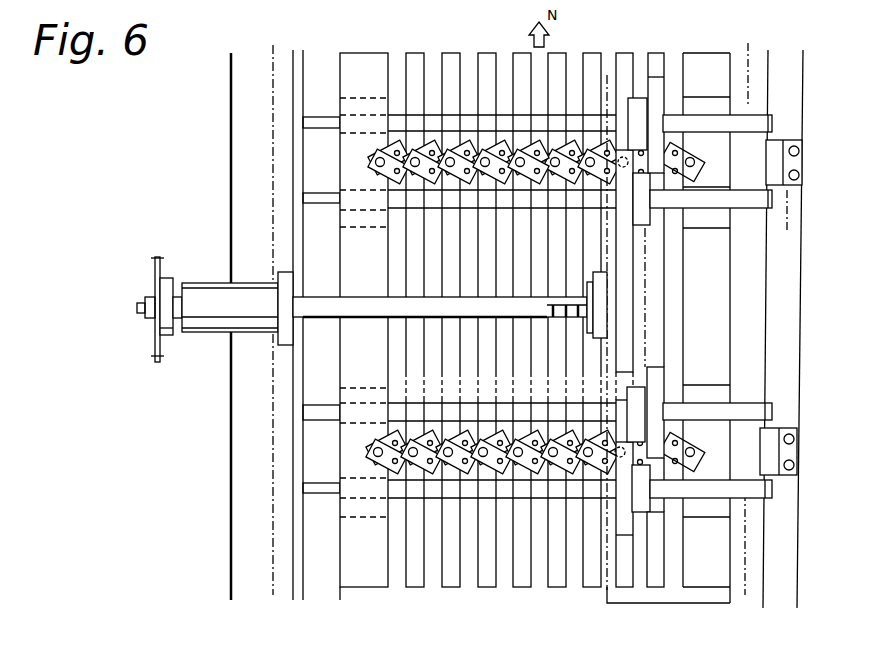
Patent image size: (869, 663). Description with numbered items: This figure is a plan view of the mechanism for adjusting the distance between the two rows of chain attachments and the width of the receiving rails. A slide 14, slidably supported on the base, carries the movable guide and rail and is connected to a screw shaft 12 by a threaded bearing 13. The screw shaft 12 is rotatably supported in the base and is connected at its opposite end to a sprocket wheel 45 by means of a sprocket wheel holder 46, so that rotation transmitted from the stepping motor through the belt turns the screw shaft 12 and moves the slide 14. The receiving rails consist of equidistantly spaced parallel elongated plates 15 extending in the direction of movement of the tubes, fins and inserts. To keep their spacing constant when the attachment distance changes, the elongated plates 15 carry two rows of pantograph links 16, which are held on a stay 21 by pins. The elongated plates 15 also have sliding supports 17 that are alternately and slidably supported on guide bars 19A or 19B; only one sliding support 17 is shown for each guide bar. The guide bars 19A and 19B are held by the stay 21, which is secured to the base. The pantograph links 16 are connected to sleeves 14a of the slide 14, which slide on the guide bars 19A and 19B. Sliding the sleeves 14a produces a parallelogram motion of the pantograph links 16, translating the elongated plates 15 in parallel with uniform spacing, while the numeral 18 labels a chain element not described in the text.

The screw shaft 12 is at (555, 297).
The threaded bearing 13 is at (597, 280).
The slide 14 is at (673, 302).
The sleeves 14a is at (725, 160).
The elongated plates 15 is at (451, 577).
The pantograph links 16 is at (396, 140).
The sliding supports 17 is at (654, 382).
The chain link 18 is at (523, 158).
The guide bar 19A is at (408, 202).
The guide bar 19B is at (503, 115).
The stay 21 is at (345, 160).
The sprocket wheel 45 is at (157, 257).
The sprocket wheel holder 46 is at (165, 280).